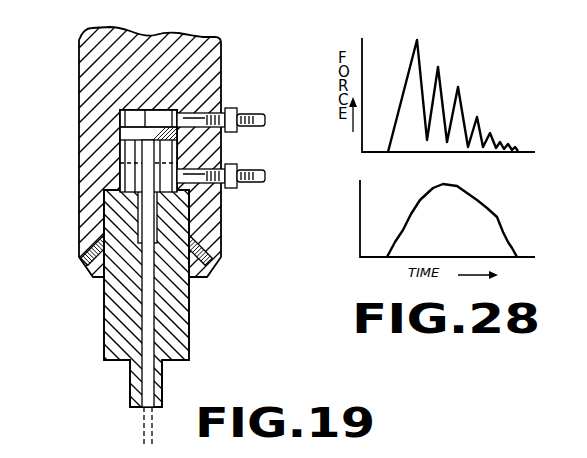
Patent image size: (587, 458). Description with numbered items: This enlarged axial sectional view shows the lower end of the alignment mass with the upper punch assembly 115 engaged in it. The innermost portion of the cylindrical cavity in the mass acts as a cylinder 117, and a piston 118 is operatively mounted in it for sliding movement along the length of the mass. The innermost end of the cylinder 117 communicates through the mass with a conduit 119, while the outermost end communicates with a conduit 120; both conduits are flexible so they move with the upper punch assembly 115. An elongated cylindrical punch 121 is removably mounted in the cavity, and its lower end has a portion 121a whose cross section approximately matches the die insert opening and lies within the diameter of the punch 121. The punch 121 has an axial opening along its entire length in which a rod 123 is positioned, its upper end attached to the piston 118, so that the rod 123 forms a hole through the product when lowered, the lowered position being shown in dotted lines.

The upper punch assembly 115 is at (98, 302).
The cylinder 117 is at (120, 148).
The piston 118 is at (175, 134).
The conduit 119 is at (257, 112).
The conduit 120 is at (264, 183).
The punch 121 is at (182, 316).
The punch portion 121a is at (161, 392).
The rod 123 is at (143, 386).